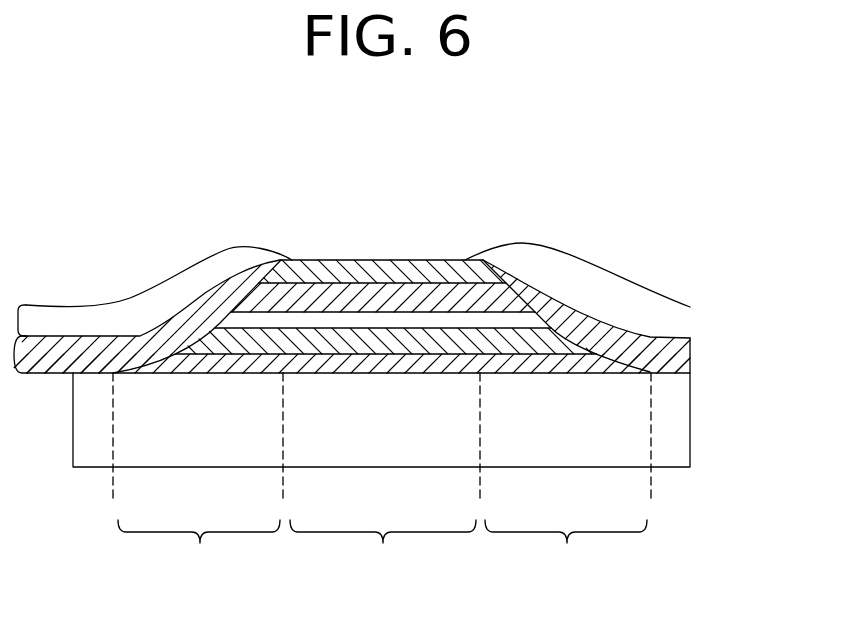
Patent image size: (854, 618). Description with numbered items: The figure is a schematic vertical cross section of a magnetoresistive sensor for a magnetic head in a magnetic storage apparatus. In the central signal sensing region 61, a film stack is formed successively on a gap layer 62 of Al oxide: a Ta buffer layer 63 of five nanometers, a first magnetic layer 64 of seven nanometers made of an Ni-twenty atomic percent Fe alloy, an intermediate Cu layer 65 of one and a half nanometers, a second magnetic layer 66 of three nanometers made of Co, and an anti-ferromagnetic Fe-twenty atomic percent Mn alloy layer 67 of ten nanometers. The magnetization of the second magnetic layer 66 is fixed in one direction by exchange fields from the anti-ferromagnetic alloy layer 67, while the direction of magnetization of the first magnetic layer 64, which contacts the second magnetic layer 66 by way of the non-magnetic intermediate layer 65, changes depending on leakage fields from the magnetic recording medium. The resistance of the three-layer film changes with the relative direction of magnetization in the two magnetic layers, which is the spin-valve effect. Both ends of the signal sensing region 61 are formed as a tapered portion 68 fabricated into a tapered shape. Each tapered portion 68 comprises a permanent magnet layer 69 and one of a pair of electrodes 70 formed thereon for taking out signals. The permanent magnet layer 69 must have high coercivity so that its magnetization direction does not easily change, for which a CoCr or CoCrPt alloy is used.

The signal sensing region 61 is at (383, 552).
The gap layer 62 is at (673, 417).
The Ta buffer layer 63 is at (458, 365).
The first magnetic layer 64 is at (413, 343).
The intermediate Cu layer 65 is at (383, 318).
The second magnetic layer 66 is at (333, 298).
The anti-ferromagnetic Fe-20 at % Mn alloy layer 67 is at (290, 272).
The tapered portion 68 is at (382, 479).
The permanent magnet layer 69 is at (132, 347).
The electrodes 70 is at (138, 300).